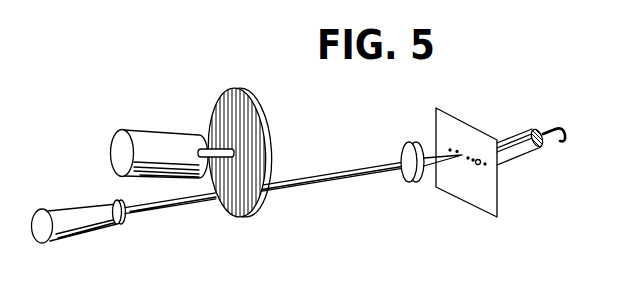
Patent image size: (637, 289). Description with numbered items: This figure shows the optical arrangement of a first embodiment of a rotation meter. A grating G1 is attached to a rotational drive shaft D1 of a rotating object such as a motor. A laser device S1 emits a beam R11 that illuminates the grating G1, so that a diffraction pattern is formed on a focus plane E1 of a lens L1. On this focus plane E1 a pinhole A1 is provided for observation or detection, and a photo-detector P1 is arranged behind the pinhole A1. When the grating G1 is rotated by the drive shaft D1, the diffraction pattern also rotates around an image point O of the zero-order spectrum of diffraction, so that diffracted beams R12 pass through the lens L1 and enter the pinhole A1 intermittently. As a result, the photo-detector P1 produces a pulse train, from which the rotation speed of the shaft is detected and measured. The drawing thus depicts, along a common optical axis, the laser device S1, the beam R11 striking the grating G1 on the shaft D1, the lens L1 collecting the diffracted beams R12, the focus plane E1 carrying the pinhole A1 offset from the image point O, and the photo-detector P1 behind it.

The laser device S1 is at (86, 234).
The beam R11 is at (180, 205).
The diffracted beams R12 is at (326, 181).
The grating G1 is at (242, 89).
The rotational drive shaft D1 is at (213, 147).
The lens L1 is at (412, 183).
The focus plane E1 is at (492, 203).
The image point of O-order spectrum O is at (467, 160).
The pinhole A1 is at (478, 167).
The photo-detector P1 is at (519, 143).